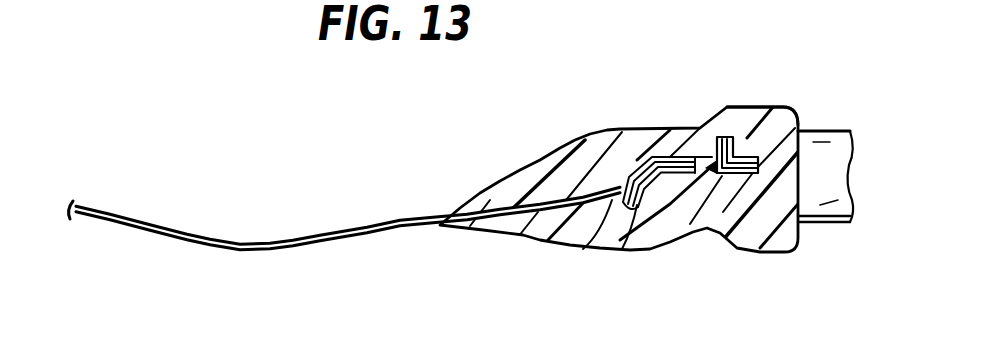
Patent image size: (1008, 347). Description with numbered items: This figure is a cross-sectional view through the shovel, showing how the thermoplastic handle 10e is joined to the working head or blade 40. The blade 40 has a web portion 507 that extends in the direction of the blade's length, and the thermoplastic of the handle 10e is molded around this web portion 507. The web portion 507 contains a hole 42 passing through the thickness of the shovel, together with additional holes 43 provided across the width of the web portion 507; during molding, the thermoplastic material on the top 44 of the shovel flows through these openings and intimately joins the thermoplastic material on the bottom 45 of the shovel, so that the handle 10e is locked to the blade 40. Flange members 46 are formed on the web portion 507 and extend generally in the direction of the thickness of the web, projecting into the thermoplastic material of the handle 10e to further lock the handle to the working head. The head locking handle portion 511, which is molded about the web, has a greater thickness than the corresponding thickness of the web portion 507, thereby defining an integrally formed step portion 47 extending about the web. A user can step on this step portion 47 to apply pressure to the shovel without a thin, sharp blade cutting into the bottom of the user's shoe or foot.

The handle 10e is at (819, 224).
The blade 40 is at (293, 238).
The hole 42 is at (585, 249).
The additional holes 43 is at (707, 230).
The top of the shovel 44 is at (487, 175).
The bottom of the shovel 45 is at (465, 240).
The flange members 46 is at (746, 136).
The step portion 47 is at (797, 118).
The web portion 507 is at (677, 156).
The head locking handle portion 511 is at (647, 133).